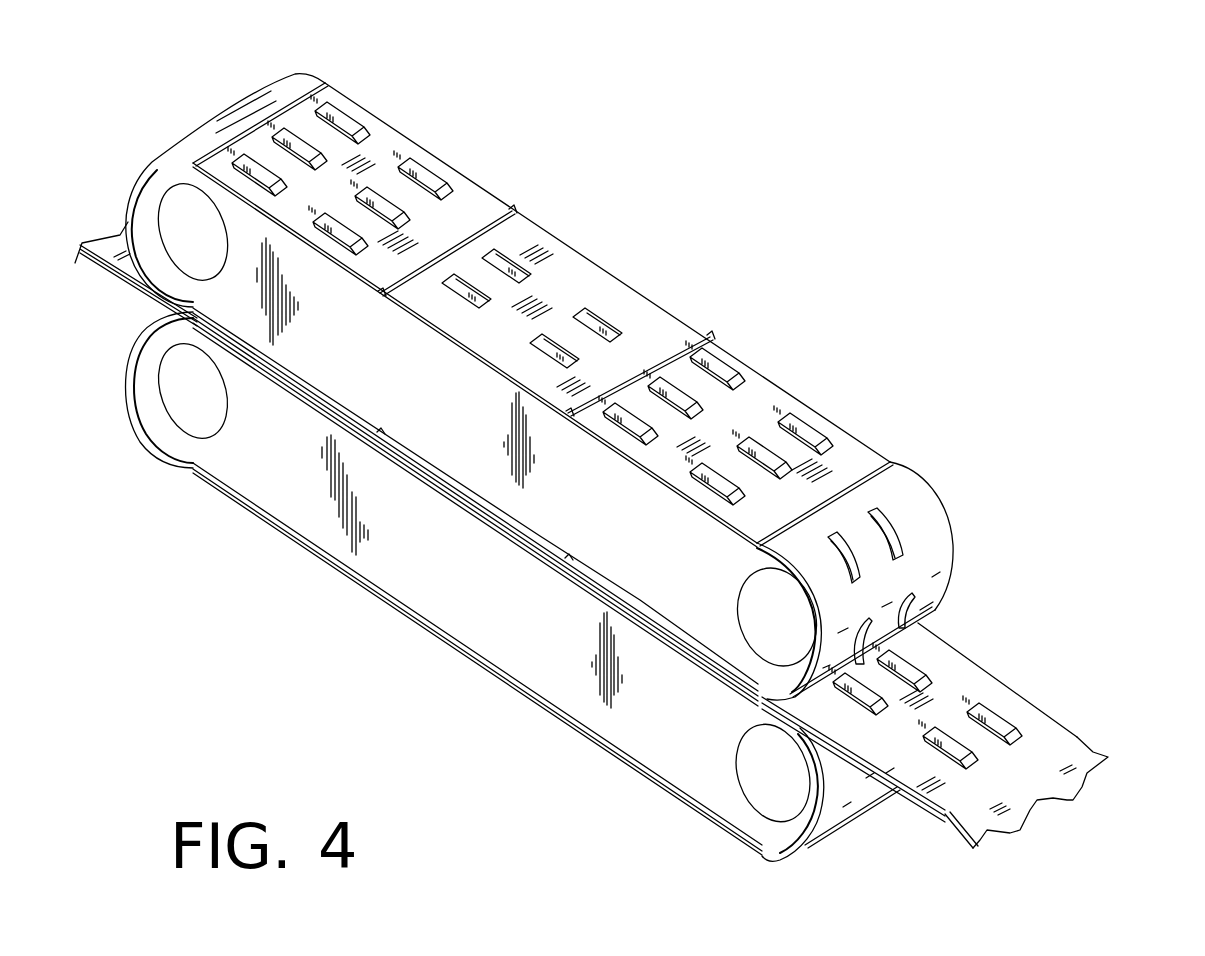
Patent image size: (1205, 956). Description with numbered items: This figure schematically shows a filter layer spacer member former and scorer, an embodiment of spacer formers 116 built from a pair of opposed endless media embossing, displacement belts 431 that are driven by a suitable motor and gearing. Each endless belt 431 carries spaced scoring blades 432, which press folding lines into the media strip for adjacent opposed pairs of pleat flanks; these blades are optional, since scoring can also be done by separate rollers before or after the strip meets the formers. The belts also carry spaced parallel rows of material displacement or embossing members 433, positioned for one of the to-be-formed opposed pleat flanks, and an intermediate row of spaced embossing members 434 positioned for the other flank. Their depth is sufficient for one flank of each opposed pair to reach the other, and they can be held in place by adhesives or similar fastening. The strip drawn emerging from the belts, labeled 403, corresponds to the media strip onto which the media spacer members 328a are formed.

The spacer formers 116 is at (788, 348).
The endless media embossing, displacement belts (spacer member formers) 431 is at (604, 267).
The scoring blades 432 is at (890, 463).
The material displacement or embossing members 433 is at (350, 122).
The material displacement or embossing members 434 is at (507, 263).
The substrate strip 403 is at (1088, 757).
The media spacer members 328a is at (986, 707).